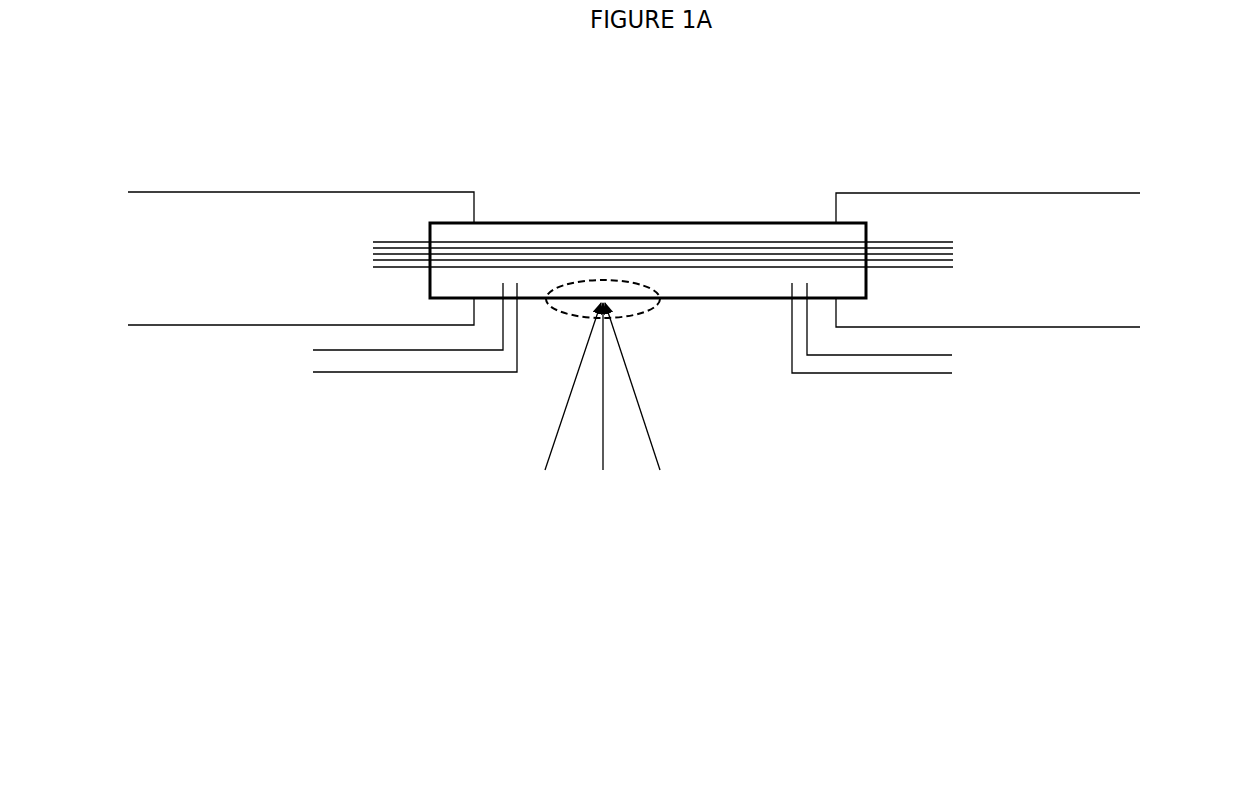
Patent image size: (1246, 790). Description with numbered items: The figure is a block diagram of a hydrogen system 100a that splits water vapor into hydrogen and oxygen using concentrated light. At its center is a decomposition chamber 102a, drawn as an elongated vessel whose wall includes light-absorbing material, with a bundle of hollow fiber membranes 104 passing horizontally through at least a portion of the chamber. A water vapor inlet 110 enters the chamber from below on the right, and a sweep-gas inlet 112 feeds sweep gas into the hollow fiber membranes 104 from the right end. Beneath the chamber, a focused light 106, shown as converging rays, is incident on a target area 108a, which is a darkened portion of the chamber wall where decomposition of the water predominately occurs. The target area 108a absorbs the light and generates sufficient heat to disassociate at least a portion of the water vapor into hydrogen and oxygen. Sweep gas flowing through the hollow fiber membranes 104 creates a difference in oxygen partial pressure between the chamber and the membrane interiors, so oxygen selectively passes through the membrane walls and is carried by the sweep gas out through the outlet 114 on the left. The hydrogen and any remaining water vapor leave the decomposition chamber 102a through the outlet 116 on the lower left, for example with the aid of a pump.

The system 100a is at (300, 108).
The decomposition chamber 102a is at (603, 218).
The hollow fiber membranes 104 is at (765, 250).
The focused light 106 is at (597, 406).
The target area 108a is at (645, 315).
The water vapor inlet 110 is at (955, 362).
The sweep-gas inlet 112 is at (968, 257).
The outlet for sweep gas and oxygen 114 is at (358, 255).
The outlet for hydrogen and water vapor 116 is at (345, 359).